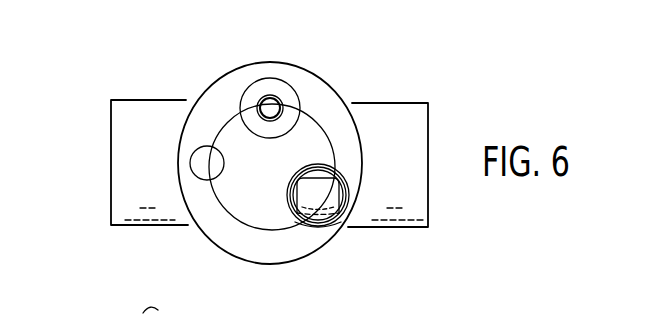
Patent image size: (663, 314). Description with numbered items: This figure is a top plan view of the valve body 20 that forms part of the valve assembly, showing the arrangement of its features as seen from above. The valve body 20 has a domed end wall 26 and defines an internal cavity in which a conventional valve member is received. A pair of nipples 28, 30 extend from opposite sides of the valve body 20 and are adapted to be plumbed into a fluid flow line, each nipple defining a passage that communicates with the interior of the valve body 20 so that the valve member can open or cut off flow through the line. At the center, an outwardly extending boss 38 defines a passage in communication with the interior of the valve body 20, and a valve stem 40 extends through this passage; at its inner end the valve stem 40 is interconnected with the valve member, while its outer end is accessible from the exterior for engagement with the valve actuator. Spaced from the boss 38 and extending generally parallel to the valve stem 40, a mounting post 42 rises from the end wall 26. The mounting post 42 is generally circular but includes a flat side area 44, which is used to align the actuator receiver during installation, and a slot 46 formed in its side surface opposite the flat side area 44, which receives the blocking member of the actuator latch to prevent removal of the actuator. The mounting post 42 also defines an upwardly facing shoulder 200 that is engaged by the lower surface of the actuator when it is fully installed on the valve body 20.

The valve body 20 is at (358, 68).
The domed end wall 26 is at (238, 200).
The nipple 28 is at (140, 100).
The nipple 30 is at (400, 103).
The boss 38 is at (280, 78).
The valve stem 40 is at (256, 107).
The mounting post 42 is at (325, 218).
The flat side area 44 is at (322, 173).
The slot 46 is at (312, 232).
The upwardly facing shoulder 200 is at (332, 163).